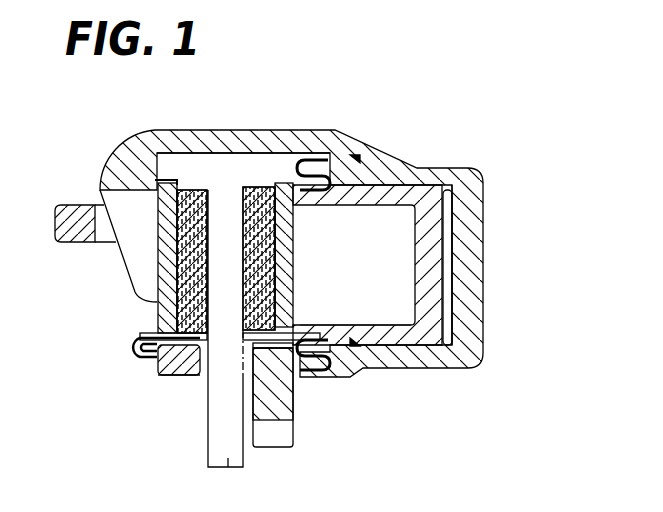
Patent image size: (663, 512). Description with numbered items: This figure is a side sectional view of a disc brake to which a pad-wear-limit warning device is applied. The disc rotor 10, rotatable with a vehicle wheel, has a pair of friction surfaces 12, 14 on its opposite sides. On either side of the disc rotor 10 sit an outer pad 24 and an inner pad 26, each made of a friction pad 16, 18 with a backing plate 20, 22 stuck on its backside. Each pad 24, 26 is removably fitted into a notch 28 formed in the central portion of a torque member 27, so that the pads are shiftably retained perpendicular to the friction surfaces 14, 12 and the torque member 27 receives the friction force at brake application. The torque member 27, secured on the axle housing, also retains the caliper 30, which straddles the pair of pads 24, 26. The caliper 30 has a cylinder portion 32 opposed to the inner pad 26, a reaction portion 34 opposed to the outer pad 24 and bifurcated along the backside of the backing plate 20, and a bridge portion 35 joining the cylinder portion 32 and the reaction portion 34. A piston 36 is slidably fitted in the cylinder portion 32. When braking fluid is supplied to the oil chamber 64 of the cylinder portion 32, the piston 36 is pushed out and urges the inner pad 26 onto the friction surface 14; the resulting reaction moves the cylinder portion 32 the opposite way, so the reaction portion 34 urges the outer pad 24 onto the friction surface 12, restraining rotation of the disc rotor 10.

The disc rotor 10 is at (230, 467).
The friction surface 12 is at (246, 463).
The friction surface 14 is at (208, 446).
The friction pad 16 is at (180, 315).
The friction pad 18 is at (280, 223).
The backing plate 20 is at (168, 283).
The backing plate 22 is at (292, 254).
The outer pad 24 is at (198, 172).
The inner pad 26 is at (268, 170).
The torque member 27 is at (165, 362).
The notch 28 is at (180, 372).
The caliper 30 is at (396, 128).
The cylinder portion 32 is at (476, 222).
The reaction portion 34 is at (128, 254).
The bridge portion 35 is at (250, 133).
The piston 36 is at (370, 333).
The oil chamber 64 is at (448, 267).